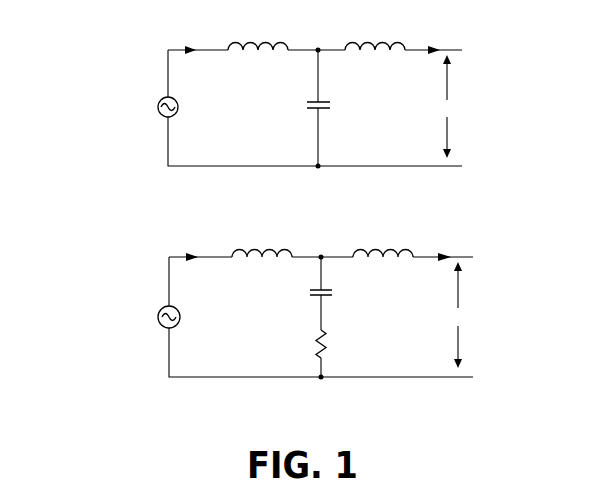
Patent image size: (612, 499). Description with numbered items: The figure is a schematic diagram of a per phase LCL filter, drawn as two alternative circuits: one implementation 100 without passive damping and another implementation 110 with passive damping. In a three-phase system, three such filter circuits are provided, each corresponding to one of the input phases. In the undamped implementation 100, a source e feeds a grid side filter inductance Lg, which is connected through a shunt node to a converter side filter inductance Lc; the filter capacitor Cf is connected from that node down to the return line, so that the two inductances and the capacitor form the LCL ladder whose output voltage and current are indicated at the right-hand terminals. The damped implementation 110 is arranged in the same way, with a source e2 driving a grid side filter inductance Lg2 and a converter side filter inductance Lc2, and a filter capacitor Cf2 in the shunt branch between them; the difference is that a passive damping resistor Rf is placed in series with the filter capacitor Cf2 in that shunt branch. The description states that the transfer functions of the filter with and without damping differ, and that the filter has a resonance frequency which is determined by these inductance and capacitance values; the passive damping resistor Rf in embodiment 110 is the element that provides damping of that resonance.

The implementation without passive damping 100 is at (103, 26).
The implementation with passive damping 110 is at (103, 235).
The voltage source e is at (162, 101).
The grid side filter inductance Lg is at (258, 38).
The converter side filter inductance Lc is at (375, 38).
The filter capacitor Cf is at (308, 107).
The passive damping resistor Rf is at (309, 344).
The voltage source e2 is at (163, 310).
The grid side filter inductance Lg2 is at (262, 245).
The converter side filter inductance Lc2 is at (383, 245).
The filter capacitor Cf2 is at (312, 294).